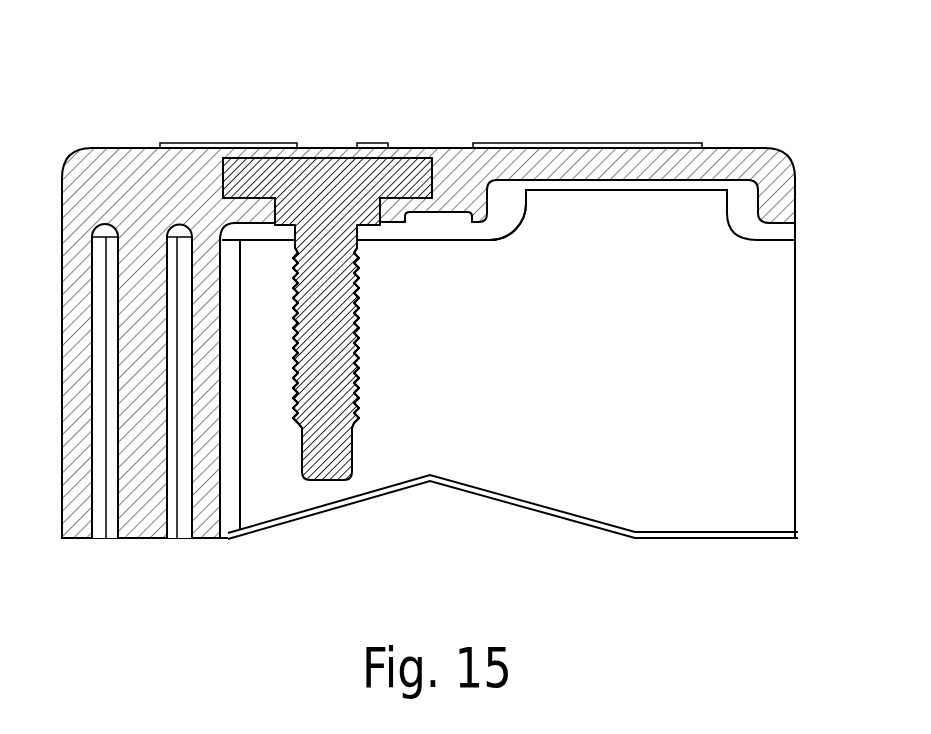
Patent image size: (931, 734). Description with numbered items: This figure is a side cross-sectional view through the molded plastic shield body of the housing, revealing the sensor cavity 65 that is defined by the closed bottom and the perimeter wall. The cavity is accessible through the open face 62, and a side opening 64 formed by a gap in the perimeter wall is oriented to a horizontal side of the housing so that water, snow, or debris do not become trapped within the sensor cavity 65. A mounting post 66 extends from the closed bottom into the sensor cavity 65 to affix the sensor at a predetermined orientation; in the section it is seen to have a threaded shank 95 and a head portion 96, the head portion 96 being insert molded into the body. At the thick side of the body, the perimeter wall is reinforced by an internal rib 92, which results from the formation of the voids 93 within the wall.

The open face 62 is at (612, 507).
The side opening 64 is at (797, 303).
The sensor cavity 65 is at (503, 320).
The mounting post 66 is at (368, 310).
The internal rib 92 is at (143, 503).
The voids 93 is at (95, 517).
The threaded shank 95 is at (328, 412).
The head portion 96 is at (328, 167).